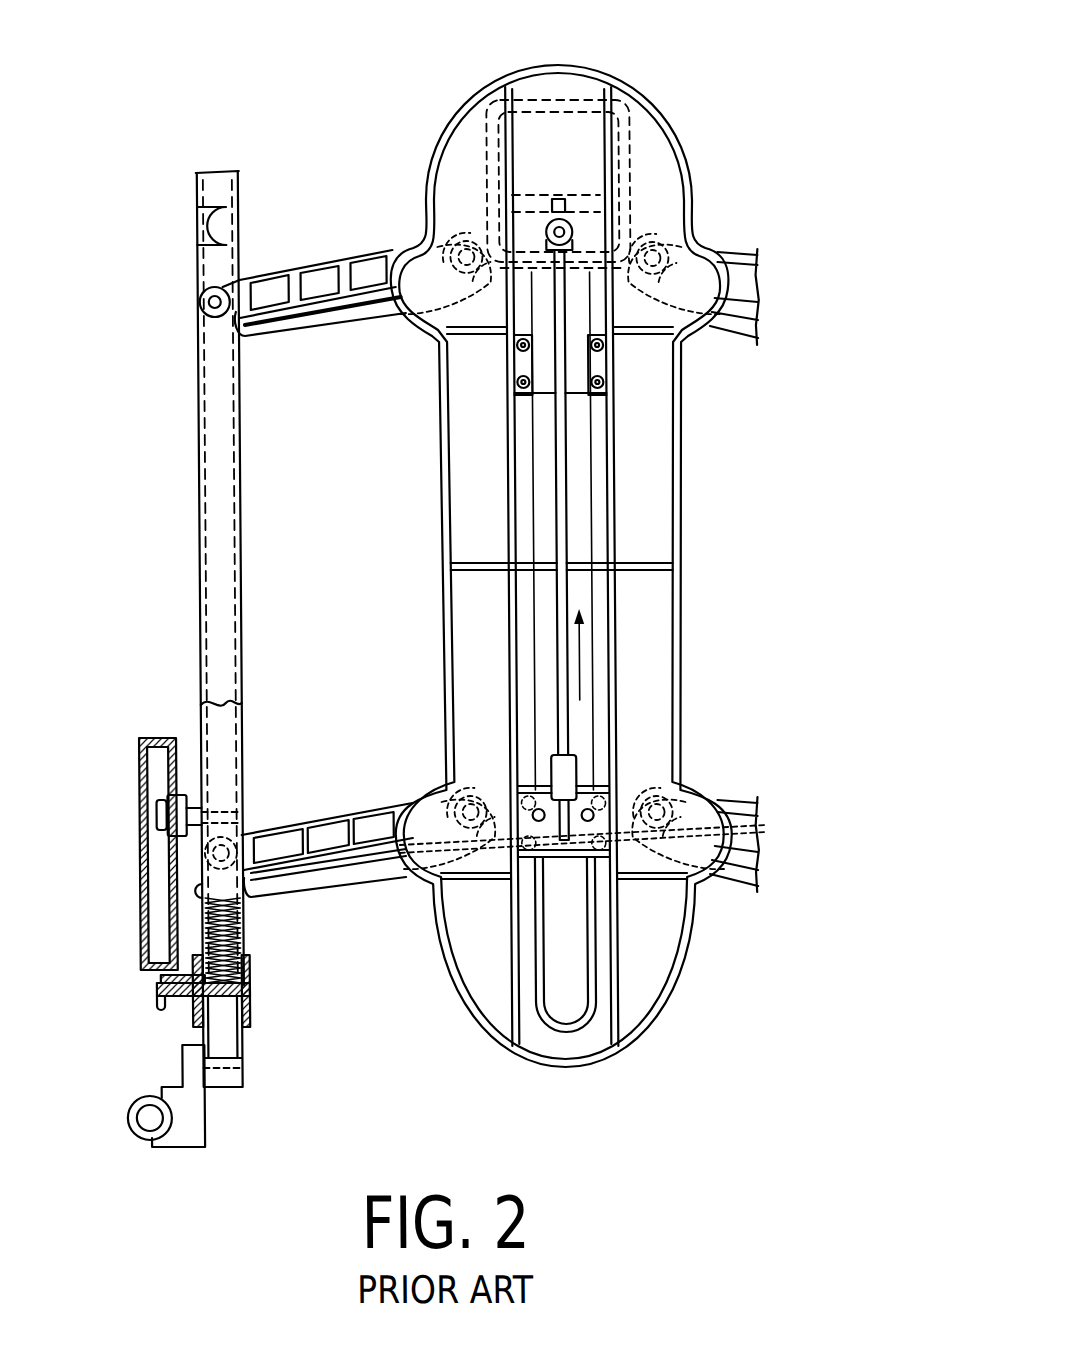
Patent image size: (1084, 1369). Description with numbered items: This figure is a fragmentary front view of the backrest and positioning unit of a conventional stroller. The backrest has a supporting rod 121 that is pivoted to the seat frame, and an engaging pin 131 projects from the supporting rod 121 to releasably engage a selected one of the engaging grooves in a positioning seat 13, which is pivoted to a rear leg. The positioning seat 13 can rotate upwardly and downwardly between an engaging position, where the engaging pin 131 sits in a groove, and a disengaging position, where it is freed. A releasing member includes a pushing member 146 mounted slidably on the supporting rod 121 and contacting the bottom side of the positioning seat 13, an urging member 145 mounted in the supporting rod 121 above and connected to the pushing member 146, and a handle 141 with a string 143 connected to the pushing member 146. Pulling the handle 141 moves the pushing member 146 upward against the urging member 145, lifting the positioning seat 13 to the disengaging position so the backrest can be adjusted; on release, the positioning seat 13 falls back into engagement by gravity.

The positioning seat 13 is at (134, 757).
The supporting rod 121 is at (235, 437).
The engaging pin 131 is at (194, 797).
The handle 141 is at (592, 198).
The string 143 is at (539, 812).
The urging member 145 is at (236, 932).
The pushing member 146 is at (172, 1003).